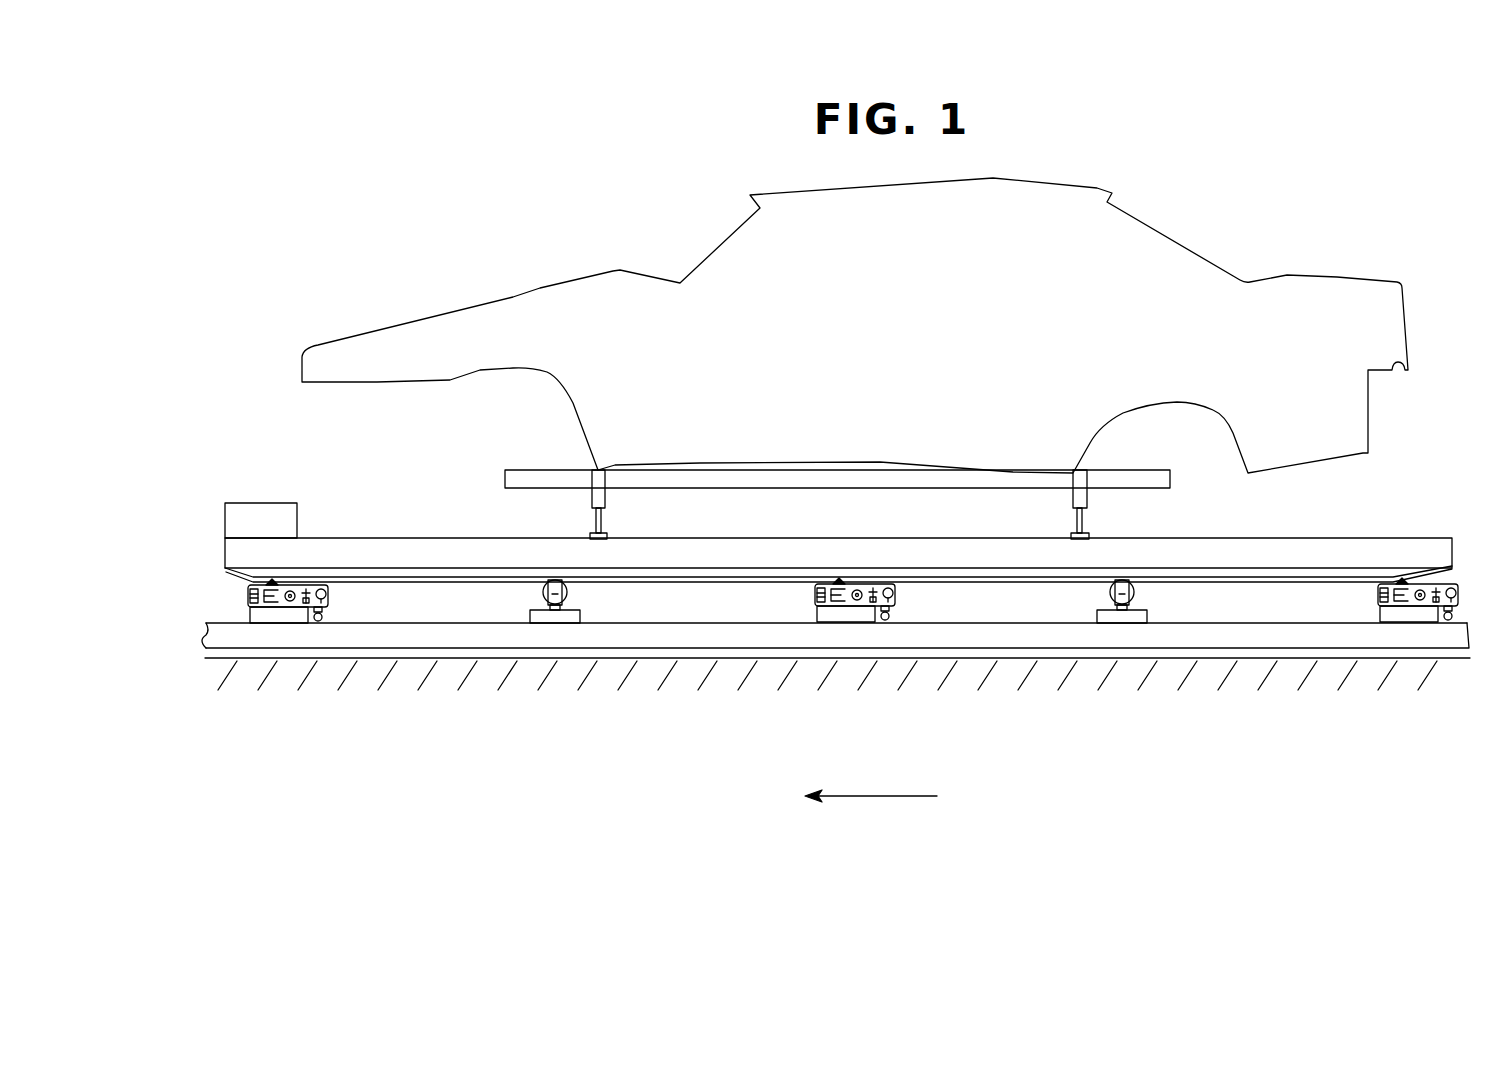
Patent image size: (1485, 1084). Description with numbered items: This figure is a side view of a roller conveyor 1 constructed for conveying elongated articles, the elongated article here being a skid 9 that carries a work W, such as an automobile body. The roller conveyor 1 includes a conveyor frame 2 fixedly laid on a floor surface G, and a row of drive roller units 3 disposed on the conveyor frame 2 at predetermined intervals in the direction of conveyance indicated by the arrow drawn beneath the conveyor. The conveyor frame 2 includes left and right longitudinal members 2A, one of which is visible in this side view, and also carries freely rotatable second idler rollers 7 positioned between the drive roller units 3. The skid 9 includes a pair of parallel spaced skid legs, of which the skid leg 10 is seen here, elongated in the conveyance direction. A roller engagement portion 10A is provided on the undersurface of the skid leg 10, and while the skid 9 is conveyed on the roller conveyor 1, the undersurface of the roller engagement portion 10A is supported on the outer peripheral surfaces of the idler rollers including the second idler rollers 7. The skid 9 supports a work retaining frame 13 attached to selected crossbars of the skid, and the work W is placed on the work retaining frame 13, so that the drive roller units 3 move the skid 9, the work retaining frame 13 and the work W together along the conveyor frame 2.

The roller conveyor 1 is at (238, 588).
The conveyor frame 2 is at (600, 649).
The longitudinal member 2A is at (1247, 633).
The drive roller unit 3 is at (240, 602).
The second idler roller 7 is at (542, 590).
The skid 9 is at (838, 606).
The skid leg 10 is at (1356, 545).
The roller engagement portion 10A is at (387, 582).
The work retaining frame 13 is at (932, 480).
The floor surface G is at (1400, 655).
The work W is at (1152, 232).